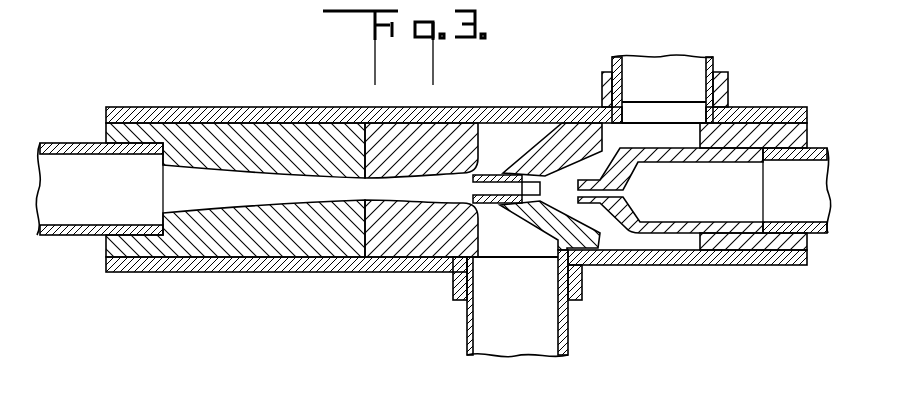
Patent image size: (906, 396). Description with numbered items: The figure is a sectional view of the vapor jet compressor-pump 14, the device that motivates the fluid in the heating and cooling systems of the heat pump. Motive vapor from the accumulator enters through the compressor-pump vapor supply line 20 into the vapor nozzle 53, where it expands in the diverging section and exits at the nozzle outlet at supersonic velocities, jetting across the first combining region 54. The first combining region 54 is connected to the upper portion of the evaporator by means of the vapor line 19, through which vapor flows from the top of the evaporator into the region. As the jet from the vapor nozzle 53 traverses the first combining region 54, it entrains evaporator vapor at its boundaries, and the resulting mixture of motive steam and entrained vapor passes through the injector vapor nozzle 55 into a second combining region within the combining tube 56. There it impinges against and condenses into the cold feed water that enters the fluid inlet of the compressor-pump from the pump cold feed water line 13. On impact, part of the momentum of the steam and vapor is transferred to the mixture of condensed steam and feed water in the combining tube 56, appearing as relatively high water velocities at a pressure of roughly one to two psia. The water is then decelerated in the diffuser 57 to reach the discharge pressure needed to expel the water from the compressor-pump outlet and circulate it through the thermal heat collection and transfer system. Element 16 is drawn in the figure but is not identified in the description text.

The pump cold feed water line 13 is at (570, 340).
The vapor jet compressor-pump 14 is at (255, 272).
The inlet conduit 16 is at (60, 146).
The vapor line 19 is at (708, 55).
The compressor-pump vapor supply line 20 is at (815, 148).
The vapor nozzle 53 is at (648, 226).
The first combining region 54 is at (562, 180).
The injector vapor nozzle 55 is at (487, 175).
The combining tube 56 is at (402, 130).
The diffuser 57 is at (227, 132).